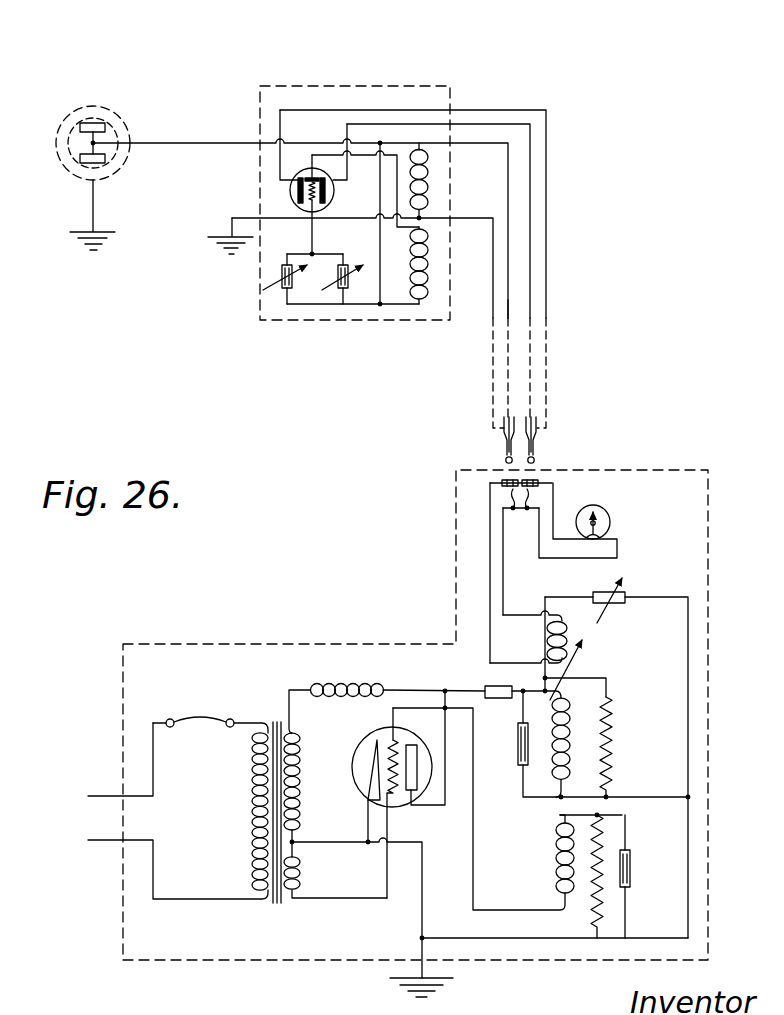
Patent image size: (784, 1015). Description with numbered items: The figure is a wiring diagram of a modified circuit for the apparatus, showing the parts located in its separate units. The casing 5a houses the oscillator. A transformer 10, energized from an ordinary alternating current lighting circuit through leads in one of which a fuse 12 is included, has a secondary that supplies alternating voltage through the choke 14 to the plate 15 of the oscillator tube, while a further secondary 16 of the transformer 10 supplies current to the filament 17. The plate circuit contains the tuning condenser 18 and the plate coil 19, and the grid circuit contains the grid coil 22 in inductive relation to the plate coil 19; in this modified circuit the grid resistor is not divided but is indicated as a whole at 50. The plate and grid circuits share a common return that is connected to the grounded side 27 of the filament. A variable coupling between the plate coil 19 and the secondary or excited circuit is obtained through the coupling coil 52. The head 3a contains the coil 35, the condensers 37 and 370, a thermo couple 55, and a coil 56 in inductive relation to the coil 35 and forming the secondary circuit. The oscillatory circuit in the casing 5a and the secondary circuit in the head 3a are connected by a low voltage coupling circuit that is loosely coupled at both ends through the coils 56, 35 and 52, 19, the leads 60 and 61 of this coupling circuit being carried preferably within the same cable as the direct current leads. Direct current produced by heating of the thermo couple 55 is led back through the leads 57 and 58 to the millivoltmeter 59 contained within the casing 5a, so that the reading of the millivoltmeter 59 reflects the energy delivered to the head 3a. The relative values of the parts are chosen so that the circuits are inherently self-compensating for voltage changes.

The head 3a is at (426, 85).
The lead 57 is at (500, 108).
The lead 58 is at (530, 147).
The thermo couple 55 is at (291, 178).
The coil 35 is at (430, 187).
The coil 56 is at (430, 271).
The condenser 37 is at (265, 279).
The condenser 370 is at (349, 250).
The lead 60 is at (493, 405).
The lead 61 is at (506, 303).
The casing 5a is at (685, 470).
The millivoltmeter 59 is at (611, 523).
The coupling coil 52 is at (558, 615).
The choke 14 is at (337, 682).
The fuse 12 is at (200, 728).
The transformer 10 is at (255, 810).
The secondary 16 is at (300, 871).
The filament 17 is at (370, 756).
The plate 15 is at (413, 782).
The tuning condenser 18 is at (518, 739).
The plate coil 19 is at (570, 745).
The grid coil 22 is at (556, 850).
The grounded side 27 is at (422, 932).
The grid resistor 50 is at (600, 910).